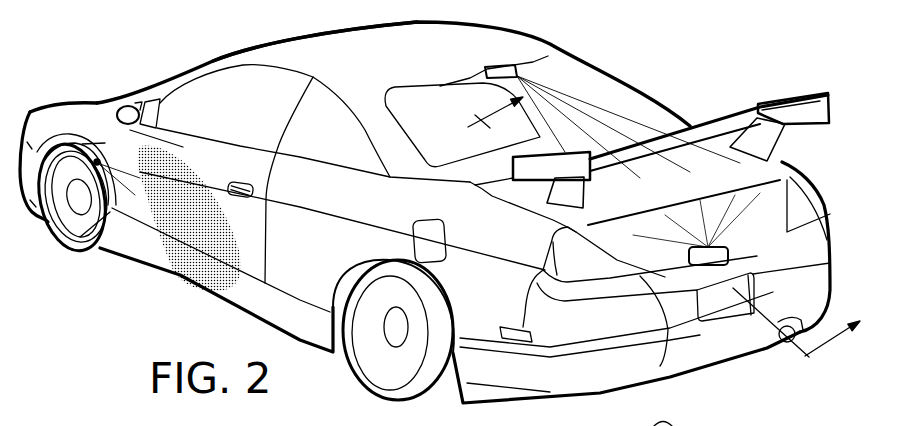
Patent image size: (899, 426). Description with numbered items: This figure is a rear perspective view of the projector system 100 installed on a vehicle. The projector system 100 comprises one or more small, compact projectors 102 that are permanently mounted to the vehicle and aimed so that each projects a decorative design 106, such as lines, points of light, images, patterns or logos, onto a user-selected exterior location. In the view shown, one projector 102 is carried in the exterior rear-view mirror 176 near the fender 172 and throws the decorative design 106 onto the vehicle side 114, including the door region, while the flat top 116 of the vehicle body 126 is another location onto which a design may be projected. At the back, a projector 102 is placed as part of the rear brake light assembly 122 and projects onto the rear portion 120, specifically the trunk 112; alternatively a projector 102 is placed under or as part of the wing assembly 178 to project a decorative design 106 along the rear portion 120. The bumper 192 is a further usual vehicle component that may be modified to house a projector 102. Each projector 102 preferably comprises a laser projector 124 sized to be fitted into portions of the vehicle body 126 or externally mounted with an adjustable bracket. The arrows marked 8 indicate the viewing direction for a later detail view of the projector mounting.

The projector system 100 is at (720, 36).
The projector 102 is at (97, 160).
The decorative design 106 is at (157, 262).
The trunk 112 is at (780, 160).
The vehicle side 114 is at (260, 277).
The top 116 is at (397, 61).
The rear portion 120 is at (532, 210).
The rear brake light assembly 122 is at (517, 68).
The laser projector 124 is at (88, 101).
The vehicle body 126 is at (212, 38).
The fender 172 is at (100, 253).
The exterior rear-view mirror 176 is at (125, 105).
The wing assembly 178 is at (768, 100).
The bumper 192 is at (662, 366).
The viewing direction of FIG. 8 is at (656, 234).